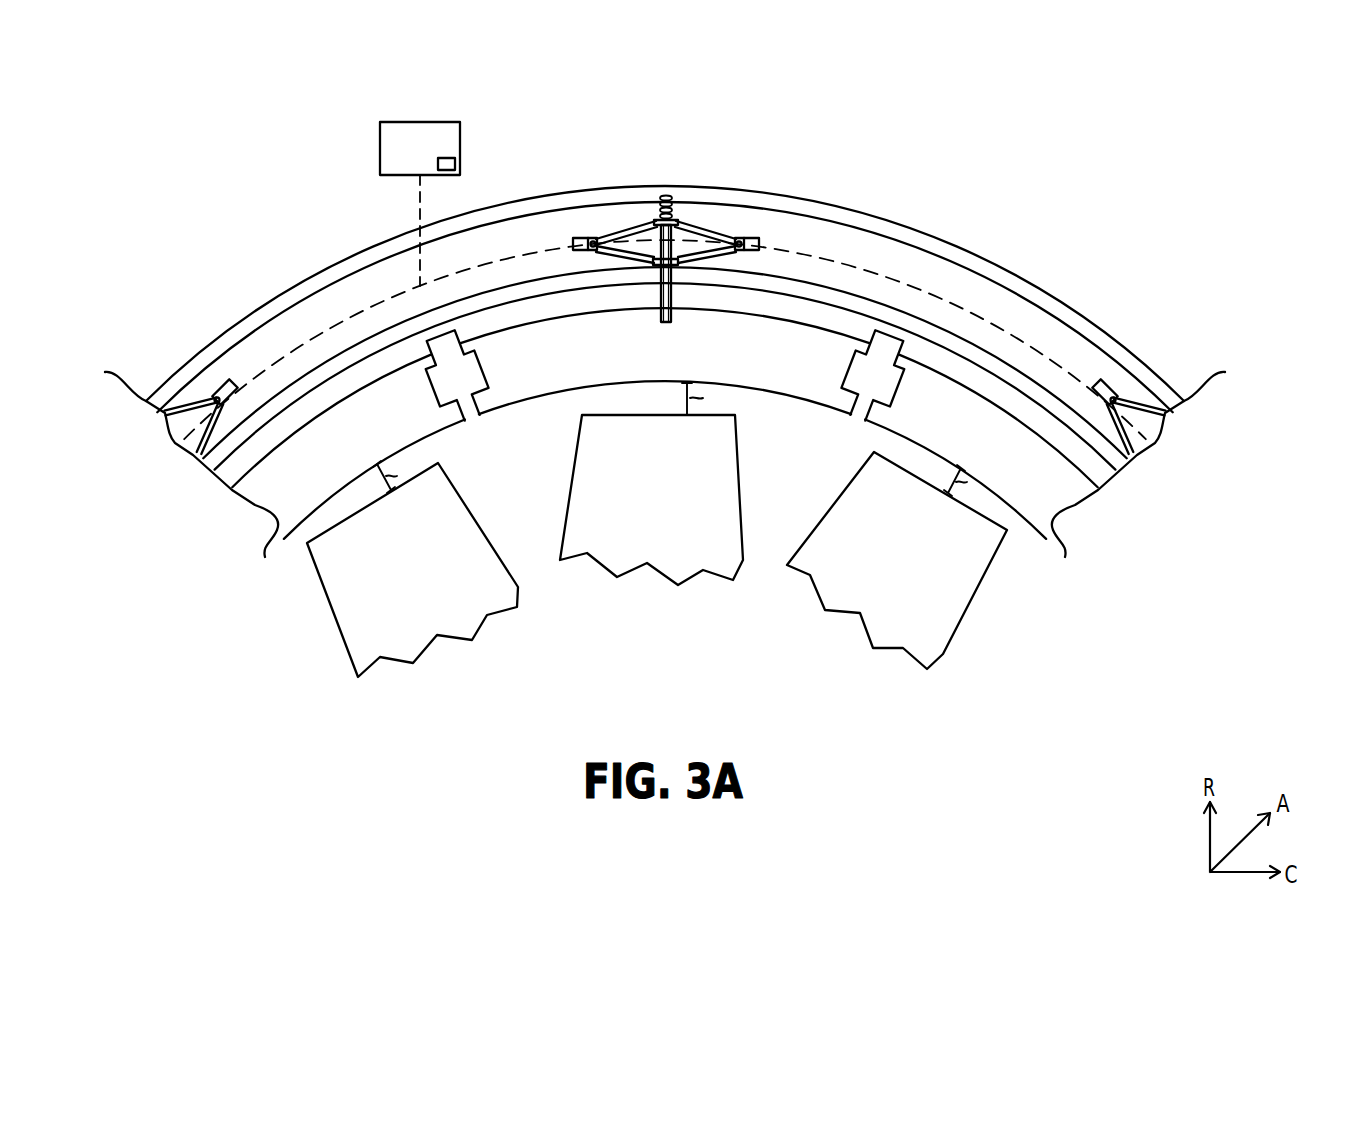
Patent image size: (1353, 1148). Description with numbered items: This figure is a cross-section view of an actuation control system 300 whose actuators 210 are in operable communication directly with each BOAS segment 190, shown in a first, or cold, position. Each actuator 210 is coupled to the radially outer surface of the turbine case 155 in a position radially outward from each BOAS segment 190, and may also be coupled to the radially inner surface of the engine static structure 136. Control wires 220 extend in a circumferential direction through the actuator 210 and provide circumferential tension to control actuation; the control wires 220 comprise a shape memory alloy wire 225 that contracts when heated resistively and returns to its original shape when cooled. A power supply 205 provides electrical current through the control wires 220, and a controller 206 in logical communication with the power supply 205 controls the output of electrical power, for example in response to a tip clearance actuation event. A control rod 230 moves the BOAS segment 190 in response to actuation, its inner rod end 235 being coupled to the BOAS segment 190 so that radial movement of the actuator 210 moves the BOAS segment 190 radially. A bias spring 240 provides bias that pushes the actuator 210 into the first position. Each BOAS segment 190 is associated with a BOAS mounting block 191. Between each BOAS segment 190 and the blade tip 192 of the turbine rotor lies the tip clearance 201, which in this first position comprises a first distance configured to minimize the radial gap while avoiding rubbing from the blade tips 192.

The engine static structure 136 is at (313, 276).
The turbine case 155 is at (240, 432).
The BOAS segment 190 is at (274, 527).
The BOAS mounting block 191 is at (480, 405).
The blade tip 192 is at (657, 546).
The tip clearance 201 is at (669, 447).
The power supply 205 is at (381, 130).
The controller 206 is at (460, 158).
The actuator 210 is at (224, 362).
The control wire 220 is at (375, 296).
The shape memory alloy wire 225 is at (649, 237).
The control rod 230 is at (672, 242).
The inner rod end 235 is at (663, 322).
The bias spring 240 is at (664, 197).
The actuation control system 300 is at (1180, 232).